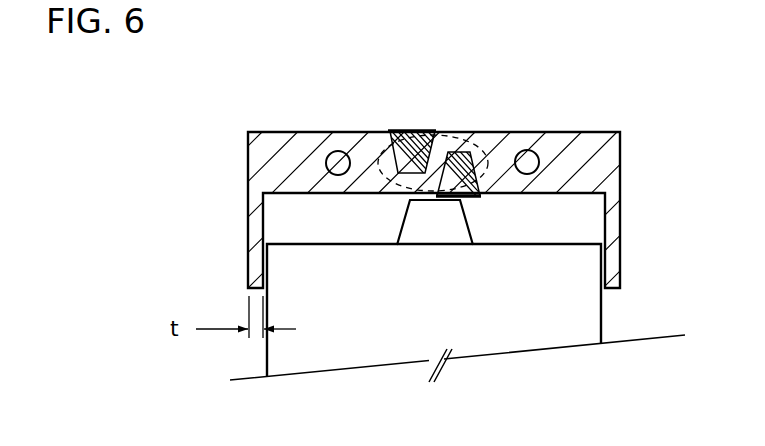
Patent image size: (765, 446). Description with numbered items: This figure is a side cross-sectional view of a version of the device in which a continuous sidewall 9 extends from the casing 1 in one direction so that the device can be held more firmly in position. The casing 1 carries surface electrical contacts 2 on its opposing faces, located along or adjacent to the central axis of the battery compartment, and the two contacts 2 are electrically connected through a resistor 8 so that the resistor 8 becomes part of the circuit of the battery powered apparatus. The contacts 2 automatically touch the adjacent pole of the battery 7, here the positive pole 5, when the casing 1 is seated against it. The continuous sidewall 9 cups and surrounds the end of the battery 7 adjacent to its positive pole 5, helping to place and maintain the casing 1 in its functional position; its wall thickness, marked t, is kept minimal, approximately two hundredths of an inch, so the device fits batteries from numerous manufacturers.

The casing 1 is at (610, 130).
The surface electrical contacts 2 is at (415, 128).
The positive pole 5 is at (448, 235).
The battery 7 is at (575, 305).
The resistor 8 is at (333, 150).
The sidewall 9 is at (247, 202).